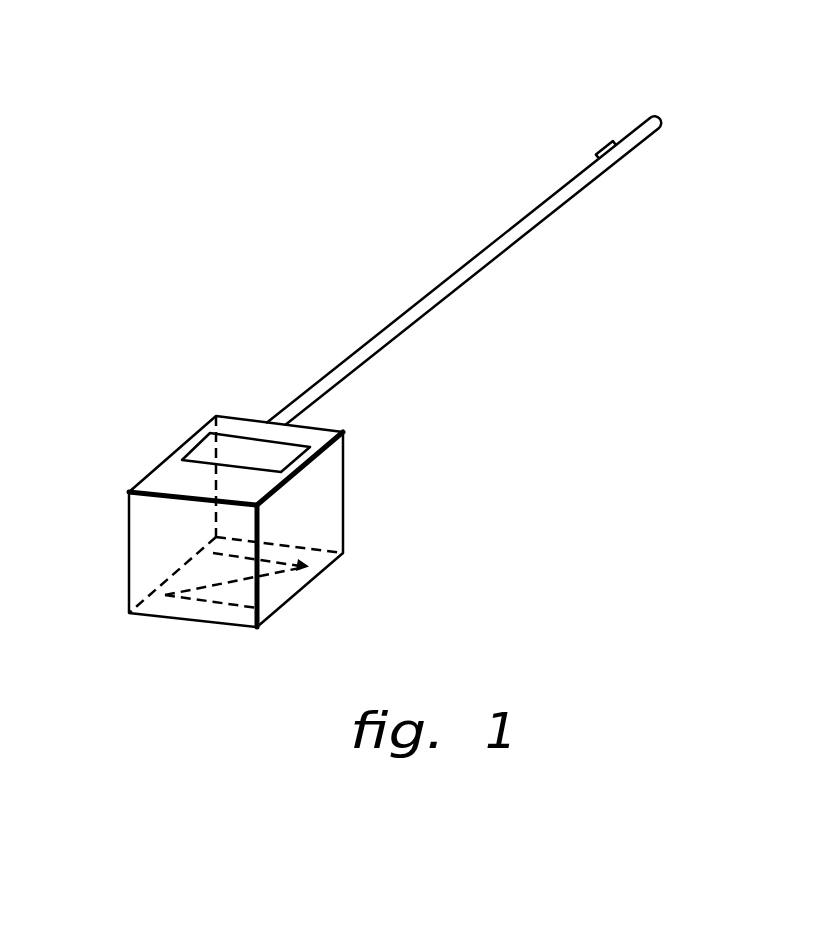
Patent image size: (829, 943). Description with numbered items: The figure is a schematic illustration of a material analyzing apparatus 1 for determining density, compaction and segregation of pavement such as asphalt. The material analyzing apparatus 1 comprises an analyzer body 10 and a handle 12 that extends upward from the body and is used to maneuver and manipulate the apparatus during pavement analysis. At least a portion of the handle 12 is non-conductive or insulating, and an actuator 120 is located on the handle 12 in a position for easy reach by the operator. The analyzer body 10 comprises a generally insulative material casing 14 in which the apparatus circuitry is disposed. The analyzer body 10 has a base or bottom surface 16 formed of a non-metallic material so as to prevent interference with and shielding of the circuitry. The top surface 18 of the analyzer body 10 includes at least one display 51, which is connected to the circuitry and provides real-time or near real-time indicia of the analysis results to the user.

The material analyzing apparatus 1 is at (148, 228).
The analyzer body 10 is at (365, 480).
The handle 12 is at (467, 281).
The insulative material casing 14 is at (138, 473).
The bottom surface 16 is at (273, 592).
The top surface 18 is at (180, 445).
The display 51 is at (232, 440).
The actuator 120 is at (599, 136).